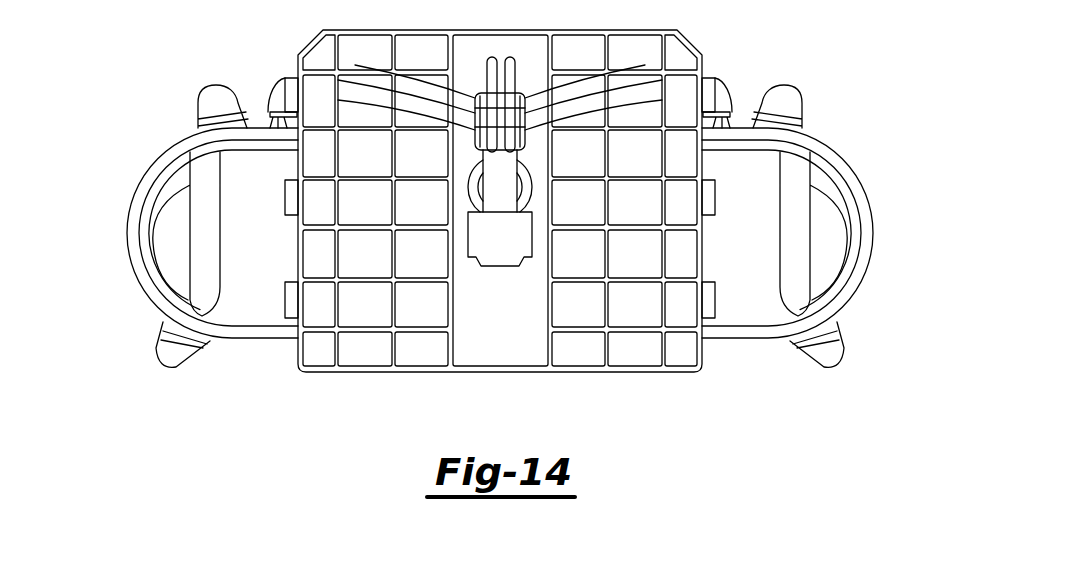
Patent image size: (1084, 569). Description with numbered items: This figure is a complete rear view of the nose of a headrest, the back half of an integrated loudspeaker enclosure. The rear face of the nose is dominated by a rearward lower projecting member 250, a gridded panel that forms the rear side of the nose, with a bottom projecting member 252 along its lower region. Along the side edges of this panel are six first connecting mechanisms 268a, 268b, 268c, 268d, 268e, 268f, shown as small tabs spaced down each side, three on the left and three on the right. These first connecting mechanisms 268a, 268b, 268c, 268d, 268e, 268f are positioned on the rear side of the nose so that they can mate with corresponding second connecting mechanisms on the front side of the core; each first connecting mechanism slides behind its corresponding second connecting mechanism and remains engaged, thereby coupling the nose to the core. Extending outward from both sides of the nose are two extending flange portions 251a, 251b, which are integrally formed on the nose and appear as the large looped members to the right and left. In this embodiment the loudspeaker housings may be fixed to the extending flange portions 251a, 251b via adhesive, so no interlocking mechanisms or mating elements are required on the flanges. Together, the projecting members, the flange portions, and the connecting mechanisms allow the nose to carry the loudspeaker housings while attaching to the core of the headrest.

The rearward lower projecting member 250 is at (636, 347).
The bottom projecting member 252 is at (362, 388).
The extending flange portion 251a is at (757, 236).
The extending flange portion 251b is at (243, 236).
The first connecting mechanism 268a is at (292, 92).
The first connecting mechanism 268b is at (293, 196).
The first connecting mechanism 268c is at (291, 302).
The first connecting mechanism 268d is at (710, 92).
The first connecting mechanism 268e is at (707, 196).
The first connecting mechanism 268f is at (709, 302).